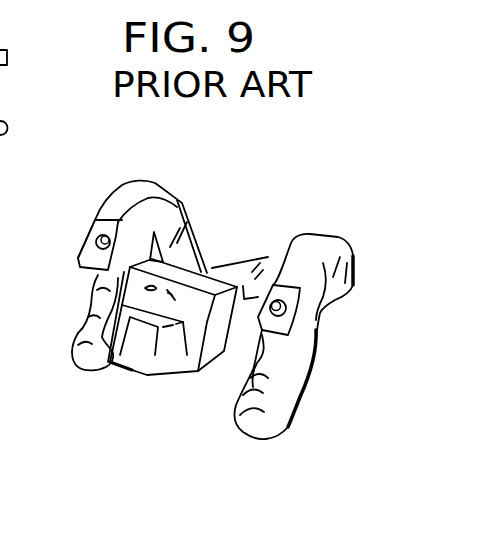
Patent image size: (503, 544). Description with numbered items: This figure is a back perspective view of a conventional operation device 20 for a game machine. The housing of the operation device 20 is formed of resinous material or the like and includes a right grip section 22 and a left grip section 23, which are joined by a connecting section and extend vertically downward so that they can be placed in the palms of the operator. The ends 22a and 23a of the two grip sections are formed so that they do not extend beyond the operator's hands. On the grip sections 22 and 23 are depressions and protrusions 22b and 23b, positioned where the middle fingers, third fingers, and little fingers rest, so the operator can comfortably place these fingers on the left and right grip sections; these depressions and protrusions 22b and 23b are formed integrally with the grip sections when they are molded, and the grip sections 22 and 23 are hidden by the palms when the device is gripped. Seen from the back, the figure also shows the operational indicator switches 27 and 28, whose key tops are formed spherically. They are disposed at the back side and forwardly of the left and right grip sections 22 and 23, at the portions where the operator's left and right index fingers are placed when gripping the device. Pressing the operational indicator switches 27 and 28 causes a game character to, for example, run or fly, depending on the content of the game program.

The operation device 20 is at (107, 199).
The right grip section 22 is at (88, 297).
The end of right grip section 22a is at (100, 372).
The depressions and protrusions of right grip section 22b is at (88, 310).
The left grip section 23 is at (307, 397).
The end of left grip section 23a is at (262, 437).
The depressions and protrusions of left grip section 23b is at (245, 378).
The operational indicator switch 27 is at (96, 242).
The operational indicator switch 28 is at (286, 308).